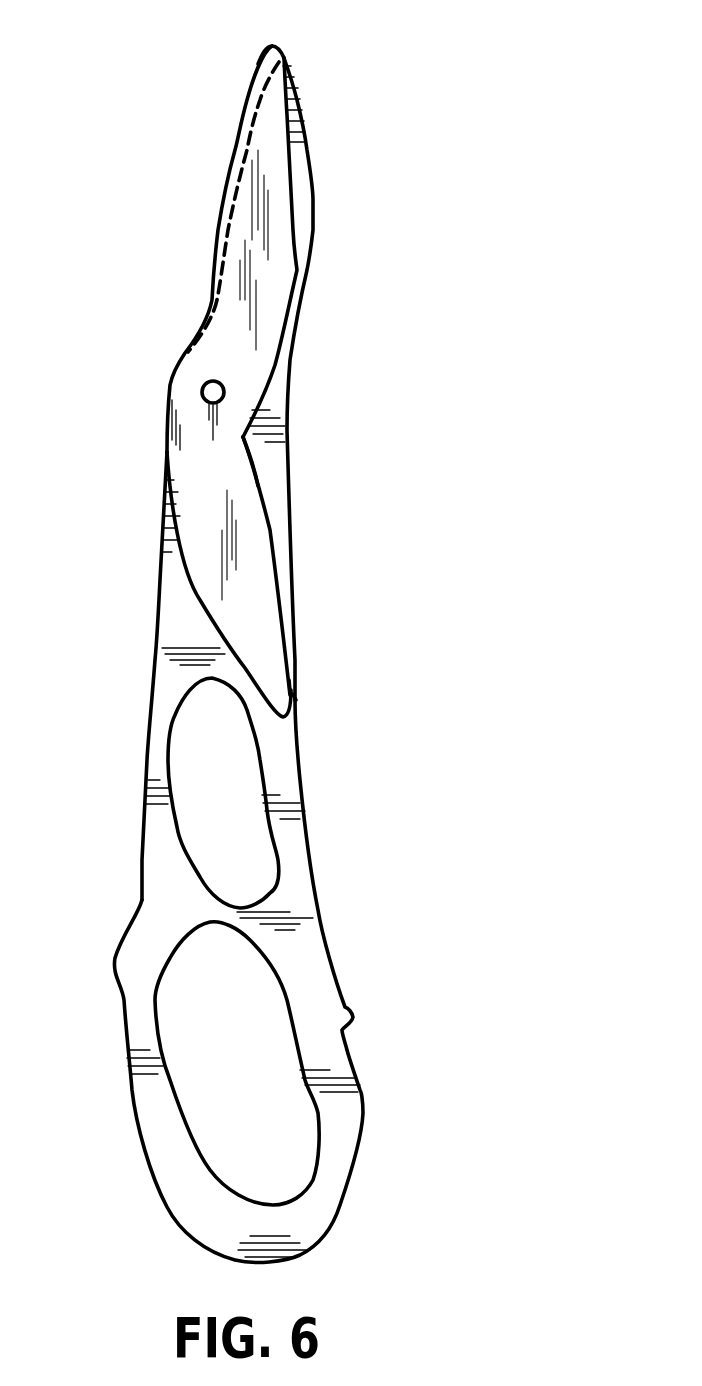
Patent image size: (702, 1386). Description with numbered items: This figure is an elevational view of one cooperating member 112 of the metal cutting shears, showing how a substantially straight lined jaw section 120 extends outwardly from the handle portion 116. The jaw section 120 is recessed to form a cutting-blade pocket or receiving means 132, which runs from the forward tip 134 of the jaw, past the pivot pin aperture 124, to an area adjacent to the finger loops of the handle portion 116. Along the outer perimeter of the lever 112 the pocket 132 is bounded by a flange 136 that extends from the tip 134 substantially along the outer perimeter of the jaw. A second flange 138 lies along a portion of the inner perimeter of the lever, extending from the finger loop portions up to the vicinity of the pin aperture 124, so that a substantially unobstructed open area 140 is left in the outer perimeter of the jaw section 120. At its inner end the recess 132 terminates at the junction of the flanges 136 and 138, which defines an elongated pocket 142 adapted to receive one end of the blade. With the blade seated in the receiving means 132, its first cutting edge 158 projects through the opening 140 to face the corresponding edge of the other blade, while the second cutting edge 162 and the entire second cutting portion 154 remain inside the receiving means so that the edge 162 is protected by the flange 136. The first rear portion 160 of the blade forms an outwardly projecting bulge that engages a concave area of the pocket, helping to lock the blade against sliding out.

The cooperating member 112 is at (160, 642).
The handle portion 116 is at (152, 902).
The jaw section 120 is at (280, 398).
The pivot pin aperture 124 is at (202, 392).
The cutting-blade pocket or receiving means 132 is at (268, 528).
The forward tip 134 is at (284, 56).
The flange 136 is at (297, 272).
The flange 138 is at (168, 518).
The open area 140 is at (233, 192).
The elongated pocket 142 is at (293, 693).
The second cutting portion 154 is at (266, 637).
The first cutting edge 158 is at (213, 228).
The first rear portion 160 is at (285, 182).
The second cutting edge 162 is at (256, 486).